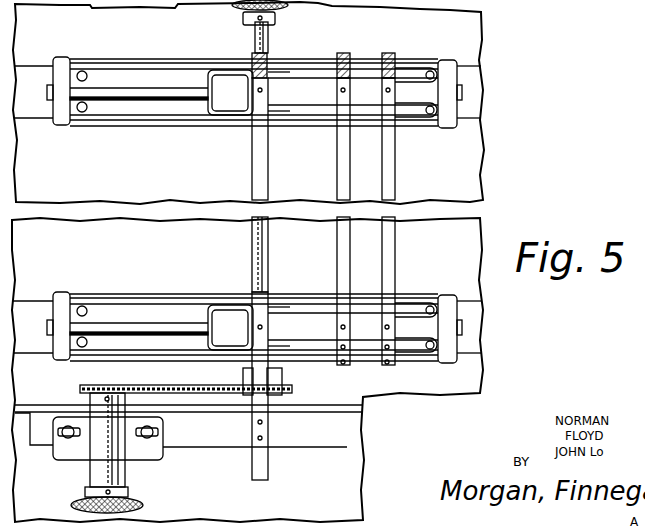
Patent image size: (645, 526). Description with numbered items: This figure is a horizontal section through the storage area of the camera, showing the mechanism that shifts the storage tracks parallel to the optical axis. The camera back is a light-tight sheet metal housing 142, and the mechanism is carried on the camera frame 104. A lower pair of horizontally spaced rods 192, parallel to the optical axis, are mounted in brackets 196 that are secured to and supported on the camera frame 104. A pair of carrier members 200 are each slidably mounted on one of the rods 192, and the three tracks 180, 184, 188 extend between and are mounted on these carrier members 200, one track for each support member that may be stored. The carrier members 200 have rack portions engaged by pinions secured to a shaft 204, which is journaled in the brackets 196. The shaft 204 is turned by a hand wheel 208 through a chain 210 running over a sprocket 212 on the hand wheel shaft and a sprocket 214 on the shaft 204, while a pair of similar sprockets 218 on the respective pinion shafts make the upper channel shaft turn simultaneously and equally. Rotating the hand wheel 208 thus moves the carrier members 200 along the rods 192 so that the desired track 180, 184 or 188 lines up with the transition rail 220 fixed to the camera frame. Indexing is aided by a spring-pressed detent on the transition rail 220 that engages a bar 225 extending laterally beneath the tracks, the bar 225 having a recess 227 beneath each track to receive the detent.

The camera frame 104 is at (30, 73).
The housing 142 is at (360, 421).
The track 180 is at (252, 165).
The track 184 is at (337, 165).
The track 188 is at (395, 167).
The lower pair of horizontally spaced rods 192 is at (128, 90).
The brackets 196 is at (188, 75).
The carrier members 200 is at (303, 90).
The shaft 204 is at (255, 35).
The hand wheel 208 is at (143, 505).
The chain 210 is at (183, 397).
The sprocket 212 is at (80, 393).
The sprocket 214 is at (284, 385).
The sprockets 218 is at (280, 12).
The transition rail 220 is at (265, 462).
The bar 225 is at (407, 352).
The recess 227 is at (343, 365).